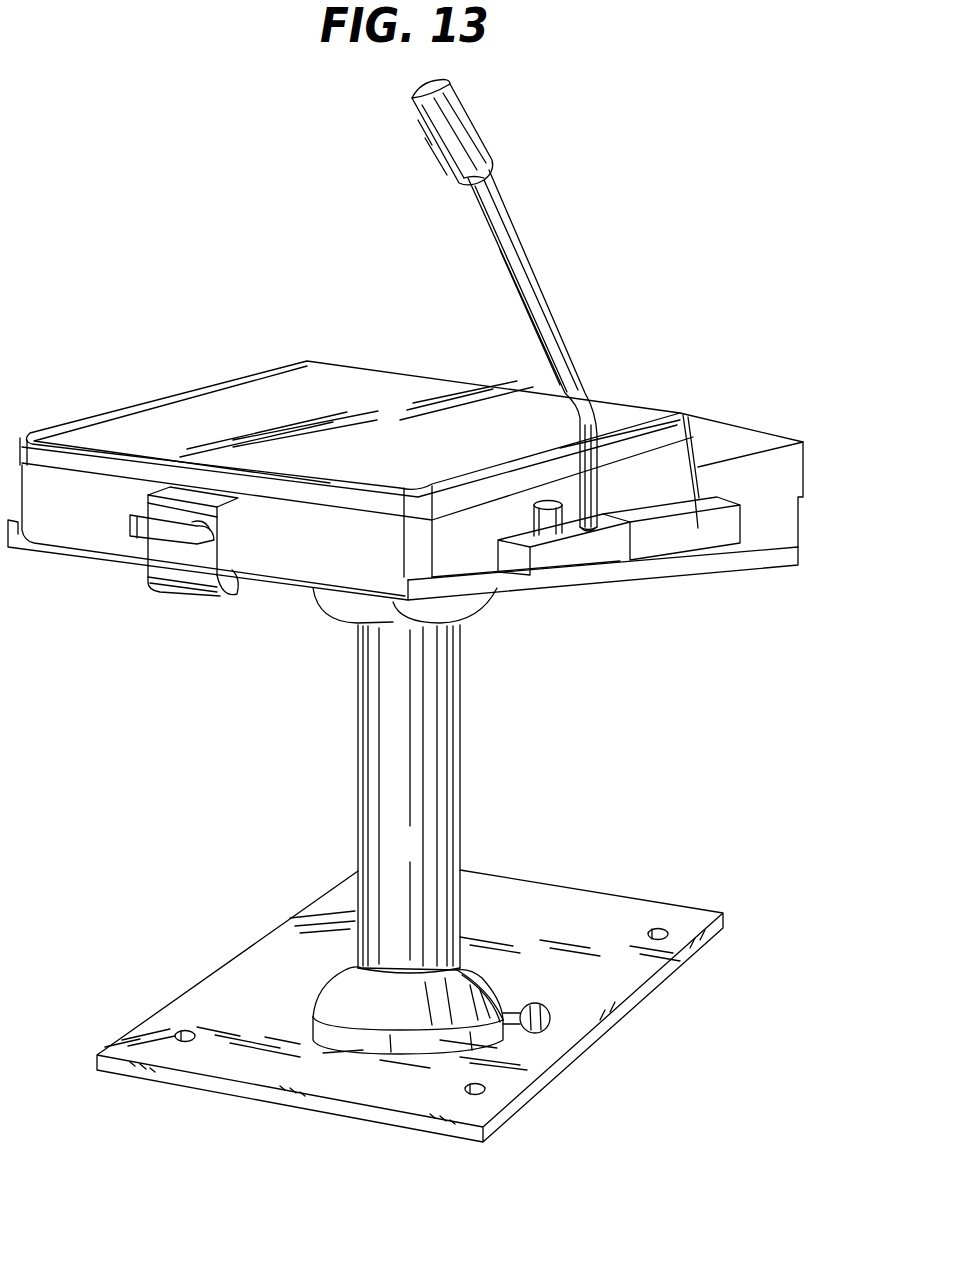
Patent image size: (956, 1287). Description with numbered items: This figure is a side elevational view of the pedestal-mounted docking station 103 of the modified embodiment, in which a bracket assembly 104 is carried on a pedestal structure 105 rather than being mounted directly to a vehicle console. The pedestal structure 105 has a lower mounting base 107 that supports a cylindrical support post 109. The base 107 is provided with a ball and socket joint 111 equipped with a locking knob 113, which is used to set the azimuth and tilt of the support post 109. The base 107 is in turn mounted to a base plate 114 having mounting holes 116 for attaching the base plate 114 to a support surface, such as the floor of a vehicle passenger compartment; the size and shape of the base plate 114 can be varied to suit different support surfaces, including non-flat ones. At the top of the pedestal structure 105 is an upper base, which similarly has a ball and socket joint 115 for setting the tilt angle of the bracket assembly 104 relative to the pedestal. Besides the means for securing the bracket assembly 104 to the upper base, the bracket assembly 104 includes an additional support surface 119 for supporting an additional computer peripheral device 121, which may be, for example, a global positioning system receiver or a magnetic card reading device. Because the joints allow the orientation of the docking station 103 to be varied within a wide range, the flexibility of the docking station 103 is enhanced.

The docking station 103 is at (95, 572).
The bracket assembly 104 is at (784, 548).
The pedestal structure 105 is at (423, 871).
The lower mounting base 107 is at (318, 993).
The cylindrical support post 109 is at (432, 848).
The ball and socket joint 111 is at (465, 963).
The locking knob 113 is at (547, 1020).
The base plate 114 is at (482, 598).
The ball and socket joint 115 is at (350, 615).
The mounting holes 116 is at (178, 1033).
The additional support surface 119 is at (700, 560).
The additional computer peripheral device 121 is at (727, 518).